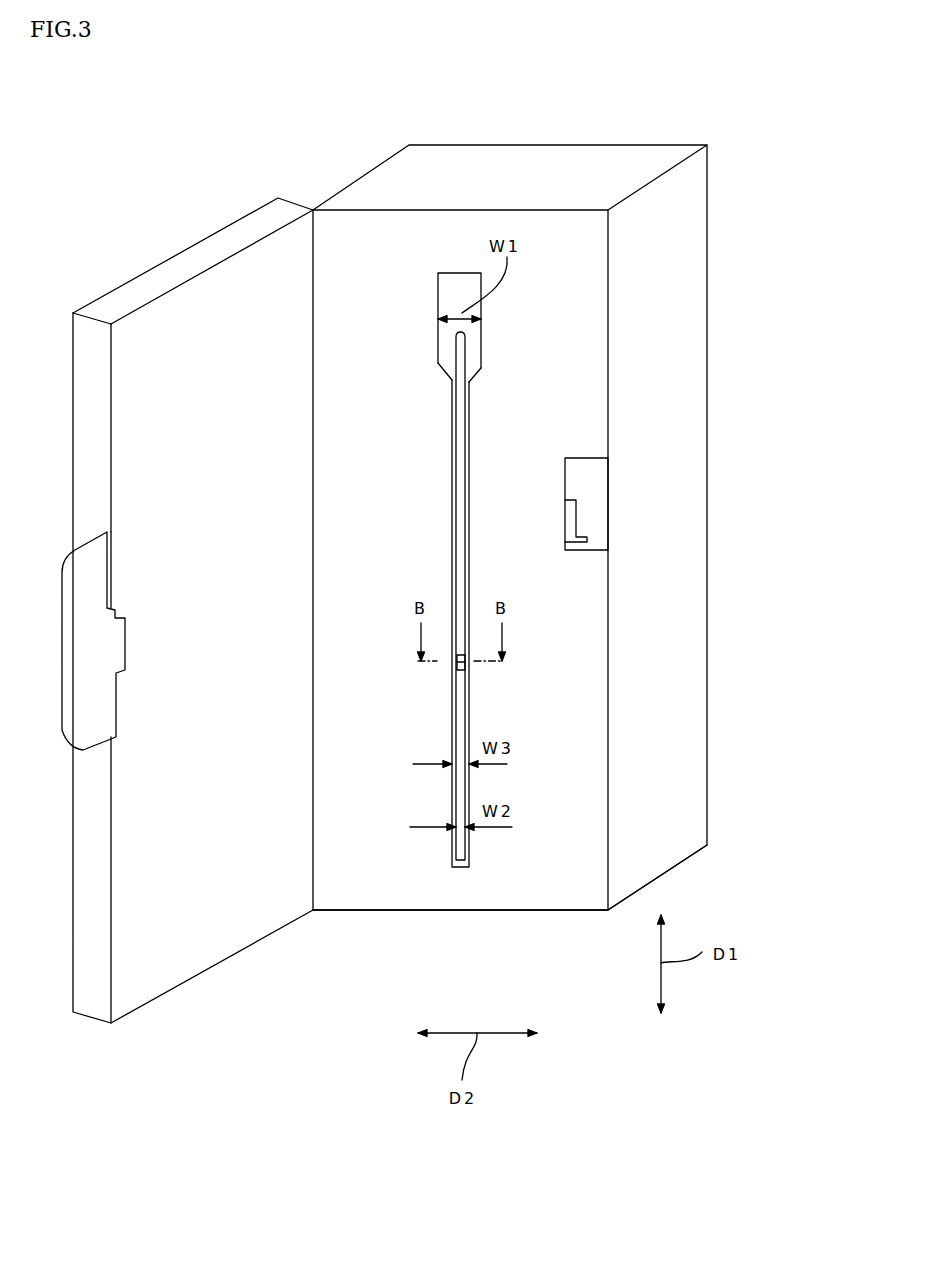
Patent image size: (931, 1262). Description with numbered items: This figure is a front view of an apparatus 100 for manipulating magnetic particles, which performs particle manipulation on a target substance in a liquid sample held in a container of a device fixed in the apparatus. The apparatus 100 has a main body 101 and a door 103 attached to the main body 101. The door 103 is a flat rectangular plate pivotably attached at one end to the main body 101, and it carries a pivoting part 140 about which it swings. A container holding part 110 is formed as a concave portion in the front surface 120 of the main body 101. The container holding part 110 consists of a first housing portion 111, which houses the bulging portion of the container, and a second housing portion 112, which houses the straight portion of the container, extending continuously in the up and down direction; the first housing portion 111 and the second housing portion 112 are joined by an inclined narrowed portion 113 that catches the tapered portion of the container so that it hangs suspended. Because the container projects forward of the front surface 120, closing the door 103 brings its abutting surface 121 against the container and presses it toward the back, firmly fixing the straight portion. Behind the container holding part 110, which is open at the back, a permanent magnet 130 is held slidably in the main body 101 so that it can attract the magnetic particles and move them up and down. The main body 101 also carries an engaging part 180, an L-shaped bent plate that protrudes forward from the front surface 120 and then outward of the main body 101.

The apparatus for manipulating magnetic particles 100 is at (508, 516).
The main body 101 is at (550, 910).
The door 103 is at (187, 604).
The container holding part 110 is at (451, 570).
The first housing portion 111 is at (446, 336).
The second housing portion 112 is at (456, 558).
The narrowed portion 113 is at (447, 374).
The front surface 120 is at (387, 235).
The abutting surface 121 is at (207, 297).
The permanent magnet 130 is at (455, 666).
The pivoting part 140 is at (103, 700).
The engaging part 180 is at (578, 525).